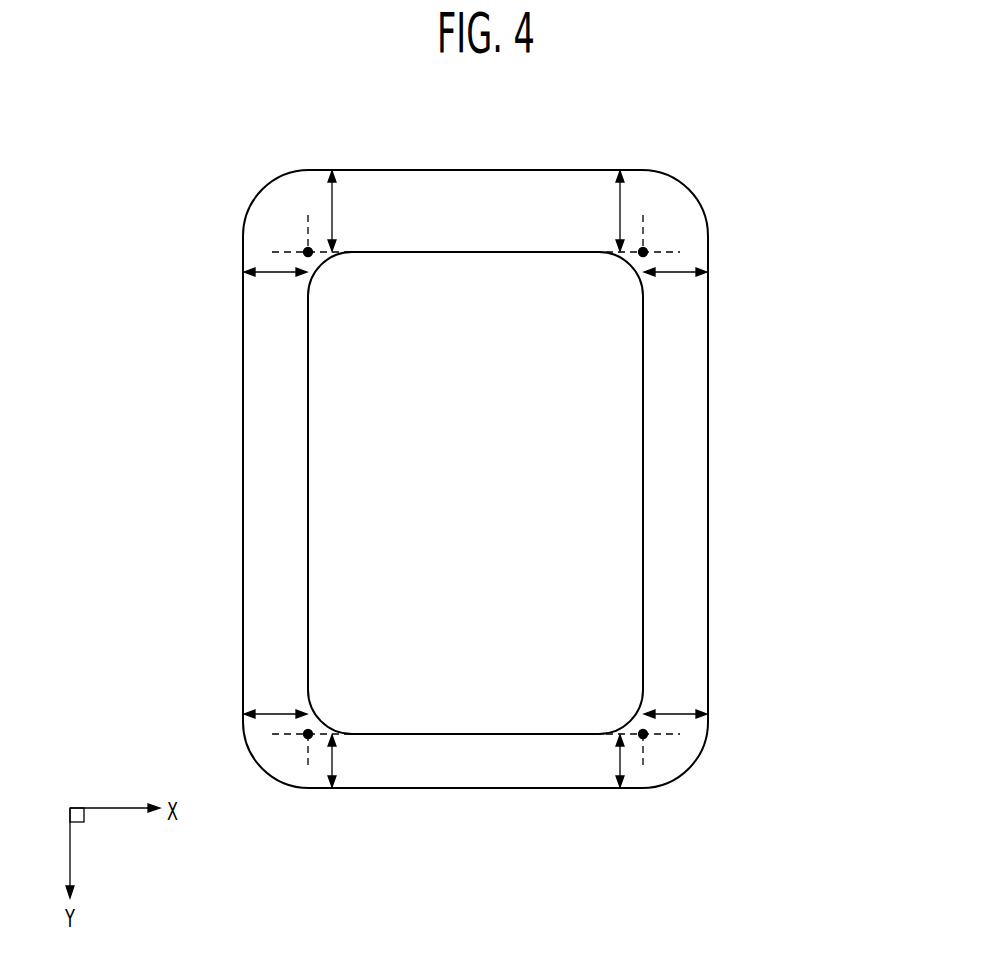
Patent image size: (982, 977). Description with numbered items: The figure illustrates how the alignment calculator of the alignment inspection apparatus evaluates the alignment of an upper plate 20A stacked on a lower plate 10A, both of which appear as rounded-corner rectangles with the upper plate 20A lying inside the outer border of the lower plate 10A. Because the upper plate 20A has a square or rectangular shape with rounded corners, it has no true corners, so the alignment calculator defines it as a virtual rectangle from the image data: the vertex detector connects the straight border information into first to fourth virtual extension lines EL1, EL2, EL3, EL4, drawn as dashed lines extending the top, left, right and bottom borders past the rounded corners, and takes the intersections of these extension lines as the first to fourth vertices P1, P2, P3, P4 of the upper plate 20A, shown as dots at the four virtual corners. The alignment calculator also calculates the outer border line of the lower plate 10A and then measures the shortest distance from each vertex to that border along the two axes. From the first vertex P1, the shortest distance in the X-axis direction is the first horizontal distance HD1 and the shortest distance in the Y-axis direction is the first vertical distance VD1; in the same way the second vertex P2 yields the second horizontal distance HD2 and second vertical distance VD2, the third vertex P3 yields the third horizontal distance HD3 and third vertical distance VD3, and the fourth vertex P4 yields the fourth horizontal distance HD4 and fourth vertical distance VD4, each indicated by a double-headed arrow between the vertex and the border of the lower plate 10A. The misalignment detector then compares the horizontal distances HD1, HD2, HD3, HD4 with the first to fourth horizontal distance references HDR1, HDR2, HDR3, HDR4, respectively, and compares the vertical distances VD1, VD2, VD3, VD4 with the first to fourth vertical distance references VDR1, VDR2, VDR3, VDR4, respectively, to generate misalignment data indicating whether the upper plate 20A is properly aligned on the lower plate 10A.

The lower plate 10A is at (447, 170).
The upper plate 20A is at (493, 253).
The first extension line EL1 is at (307, 220).
The second extension line EL2 is at (283, 252).
The third extension line EL3 is at (646, 218).
The fourth extension line EL4 is at (286, 736).
The first vertex P1 is at (306, 250).
The second vertex P2 is at (646, 249).
The third vertex P3 is at (306, 738).
The fourth vertex P4 is at (645, 738).
The first vertical distance VD1 is at (349, 174).
The second vertical distance VD2 is at (603, 174).
The third vertical distance VD3 is at (348, 807).
The fourth vertical distance VD4 is at (603, 807).
The first horizontal distance HD1 is at (207, 289).
The second horizontal distance HD2 is at (750, 286).
The third horizontal distance HD3 is at (202, 700).
The fourth horizontal distance HD4 is at (752, 700).
The first vertical distance reference VDR1 is at (333, 208).
The second vertical distance reference VDR2 is at (619, 212).
The third vertical distance reference VDR3 is at (333, 758).
The fourth vertical distance reference VDR4 is at (619, 758).
The first horizontal distance reference HDR1 is at (277, 273).
The second horizontal distance reference HDR2 is at (673, 273).
The third horizontal distance reference HDR3 is at (277, 712).
The fourth horizontal distance reference HDR4 is at (673, 712).